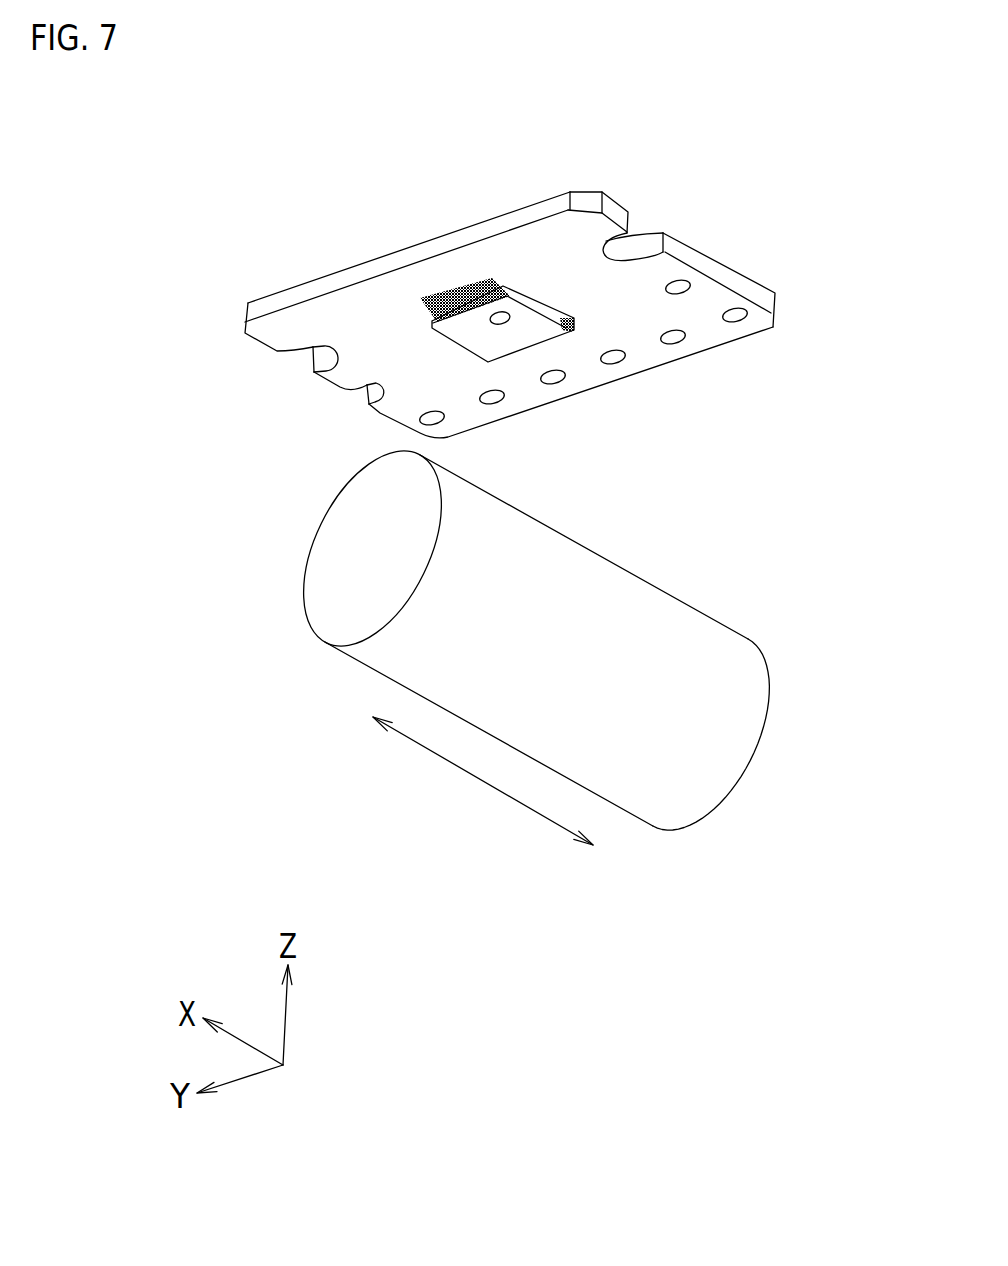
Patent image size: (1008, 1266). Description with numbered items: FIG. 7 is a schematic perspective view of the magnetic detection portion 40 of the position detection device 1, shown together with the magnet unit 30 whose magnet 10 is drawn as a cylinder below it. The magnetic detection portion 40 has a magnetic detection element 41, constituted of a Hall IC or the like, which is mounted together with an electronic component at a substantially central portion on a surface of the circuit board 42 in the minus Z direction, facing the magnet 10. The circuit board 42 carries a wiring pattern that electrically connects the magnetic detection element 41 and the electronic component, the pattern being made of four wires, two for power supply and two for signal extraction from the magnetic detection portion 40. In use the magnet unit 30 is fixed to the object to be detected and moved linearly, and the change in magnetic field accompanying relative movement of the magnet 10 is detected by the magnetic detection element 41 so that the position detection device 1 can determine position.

The position detection device 1 is at (568, 265).
The magnet 10 is at (698, 608).
The magnet unit 30 is at (553, 637).
The magnetic detection portion 40 is at (510, 265).
The magnetic detection element 41 is at (523, 328).
The circuit board 42 is at (503, 222).